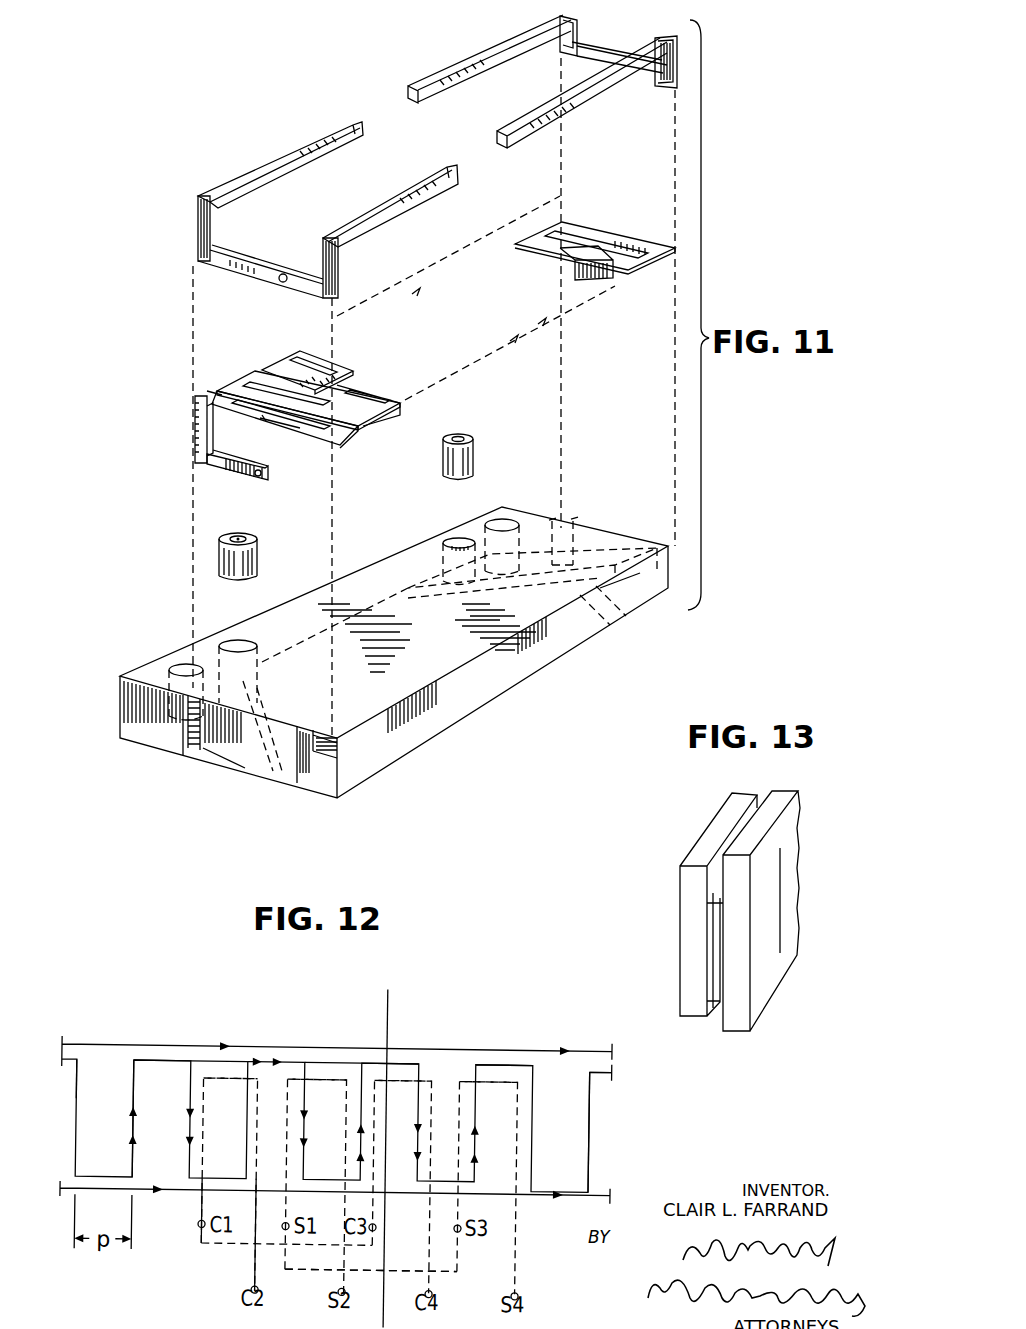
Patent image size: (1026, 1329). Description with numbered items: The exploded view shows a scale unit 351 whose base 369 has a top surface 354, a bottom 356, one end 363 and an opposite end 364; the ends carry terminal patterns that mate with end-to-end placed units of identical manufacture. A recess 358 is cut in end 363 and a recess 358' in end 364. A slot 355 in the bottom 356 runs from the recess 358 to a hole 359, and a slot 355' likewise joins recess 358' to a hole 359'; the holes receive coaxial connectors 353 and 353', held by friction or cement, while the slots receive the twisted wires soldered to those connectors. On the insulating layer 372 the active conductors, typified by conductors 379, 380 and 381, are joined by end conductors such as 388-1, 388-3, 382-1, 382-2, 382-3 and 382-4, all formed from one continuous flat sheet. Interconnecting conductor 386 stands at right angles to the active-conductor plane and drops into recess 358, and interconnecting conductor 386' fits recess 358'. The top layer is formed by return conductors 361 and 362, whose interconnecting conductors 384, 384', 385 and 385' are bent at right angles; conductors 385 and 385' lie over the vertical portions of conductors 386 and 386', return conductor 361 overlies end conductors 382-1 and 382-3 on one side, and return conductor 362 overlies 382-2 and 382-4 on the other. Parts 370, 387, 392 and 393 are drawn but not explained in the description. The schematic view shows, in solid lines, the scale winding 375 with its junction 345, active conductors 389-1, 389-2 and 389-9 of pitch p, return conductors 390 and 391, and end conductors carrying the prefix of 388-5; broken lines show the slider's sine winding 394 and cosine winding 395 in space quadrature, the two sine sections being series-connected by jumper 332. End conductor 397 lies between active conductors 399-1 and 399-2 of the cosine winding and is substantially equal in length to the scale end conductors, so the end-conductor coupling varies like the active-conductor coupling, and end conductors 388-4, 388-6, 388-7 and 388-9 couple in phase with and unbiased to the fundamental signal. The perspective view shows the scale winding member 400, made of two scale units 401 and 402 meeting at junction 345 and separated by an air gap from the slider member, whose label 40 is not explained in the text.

In FIG. 11, the scale unit 351 is at (437, 644).
In FIG. 11, the coaxial connector 353 is at (262, 548).
In FIG. 11, the coaxial connector 353' is at (488, 456).
In FIG. 11, the top surface 354 is at (450, 655).
In FIG. 11, the slot 355 is at (290, 752).
In FIG. 11, the slot 355' is at (627, 617).
In FIG. 11, the bottom 356 is at (380, 750).
In FIG. 11, the recess 358 is at (195, 749).
In FIG. 11, the recess 358' is at (593, 515).
In FIG. 11, the hole 359 is at (261, 636).
In FIG. 11, the hole 359' is at (435, 540).
In FIG. 11, the return conductor 361 is at (300, 150).
In FIG. 11, the return conductor 362 is at (607, 77).
In FIG. 11, the end 363 is at (147, 735).
In FIG. 11, the end 364 is at (557, 522).
In FIG. 11, the base 369 is at (535, 660).
In FIG. 11, the pole bar 370 is at (318, 157).
In FIG. 11, the insulating layer 372 is at (195, 421).
In FIG. 11, the active conductor 379 is at (303, 435).
In FIG. 11, the active conductor 380 is at (395, 416).
In FIG. 11, the active conductor 381 is at (350, 398).
In FIG. 11, the end conductor 382-1 is at (254, 350).
In FIG. 11, the end conductor 382-2 is at (346, 437).
In FIG. 11, the end conductor 382-3 is at (290, 360).
In FIG. 11, the end conductor 382-4 is at (628, 257).
In FIG. 11, the interconnecting conductor 384 is at (360, 268).
In FIG. 11, the interconnecting conductor 384' is at (585, 78).
In FIG. 11, the interconnecting conductor 385 is at (298, 213).
In FIG. 11, the interconnecting conductor 385' is at (524, 55).
In FIG. 11, the interconnecting conductor 386 is at (199, 449).
In FIG. 11, the interconnecting conductor 386' is at (550, 269).
In FIG. 11, the cross bar 387 is at (247, 268).
In FIG. 11, the bracket arm 392 is at (250, 477).
In FIG. 11, the pin 393 is at (280, 276).
In FIG. 12, the junction 345 is at (387, 1002).
In FIG. 13, the junction 345 is at (780, 853).
In FIG. 12, the scale winding 375 is at (598, 1145).
In FIG. 13, the scale winding 375 is at (720, 1010).
In FIG. 12, the end conductor 388-1 is at (152, 1060).
In FIG. 12, the end conductor 388-3 is at (292, 1064).
In FIG. 12, the end conductor 388-4 is at (395, 1076).
In FIG. 12, the end conductor 388-5 is at (490, 1066).
In FIG. 12, the end conductor 388-6 is at (330, 1075).
In FIG. 12, the end conductor 388-7 is at (470, 1076).
In FIG. 12, the end conductor 388-9 is at (222, 1076).
In FIG. 12, the active conductor 389-1 is at (130, 1068).
In FIG. 12, the active conductor 389-2 is at (160, 1119).
In FIG. 12, the active conductor 389-9 is at (592, 1105).
In FIG. 12, the return conductor 390 is at (378, 1060).
In FIG. 12, the return conductor 391 is at (545, 1195).
In FIG. 12, the sine winding 394 is at (312, 1074).
In FIG. 13, the sine winding 394 is at (672, 904).
In FIG. 12, the cosine winding 395 is at (428, 1076).
In FIG. 13, the cosine winding 395 is at (707, 905).
In FIG. 12, the end conductor 397 is at (208, 1070).
In FIG. 12, the active conductor 399-1 is at (205, 1195).
In FIG. 12, the active conductor 399-2 is at (231, 1234).
In FIG. 12, the scale unit 401 is at (577, 1056).
In FIG. 13, the scale unit 401 is at (762, 993).
In FIG. 12, the scale unit 402 is at (48, 1050).
In FIG. 13, the scale unit 402 is at (790, 948).
In FIG. 12, the jumper 332 is at (320, 1268).
In FIG. 13, the slider 40 is at (724, 925).
In FIG. 13, the scale winding member 400 is at (792, 911).